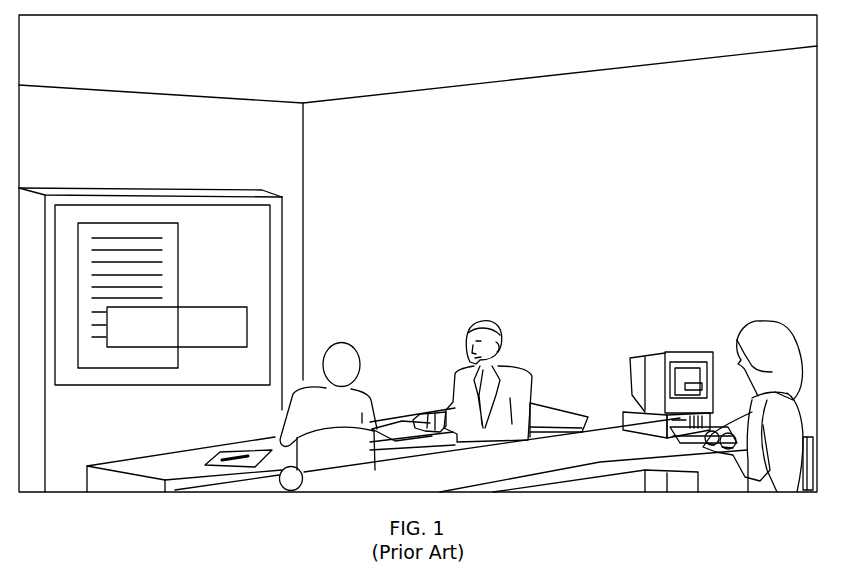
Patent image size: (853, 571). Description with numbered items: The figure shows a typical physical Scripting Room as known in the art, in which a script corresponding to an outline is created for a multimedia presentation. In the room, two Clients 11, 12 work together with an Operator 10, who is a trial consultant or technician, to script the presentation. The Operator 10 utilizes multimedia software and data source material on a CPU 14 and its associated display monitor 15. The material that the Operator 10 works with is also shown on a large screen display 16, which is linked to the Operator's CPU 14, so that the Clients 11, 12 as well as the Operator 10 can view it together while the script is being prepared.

The Operator 10 is at (767, 323).
The Client 11 is at (483, 318).
The Client 12 is at (344, 340).
The CPU 14 is at (675, 471).
The display monitor 15 is at (700, 372).
The large screen display 16 is at (128, 222).